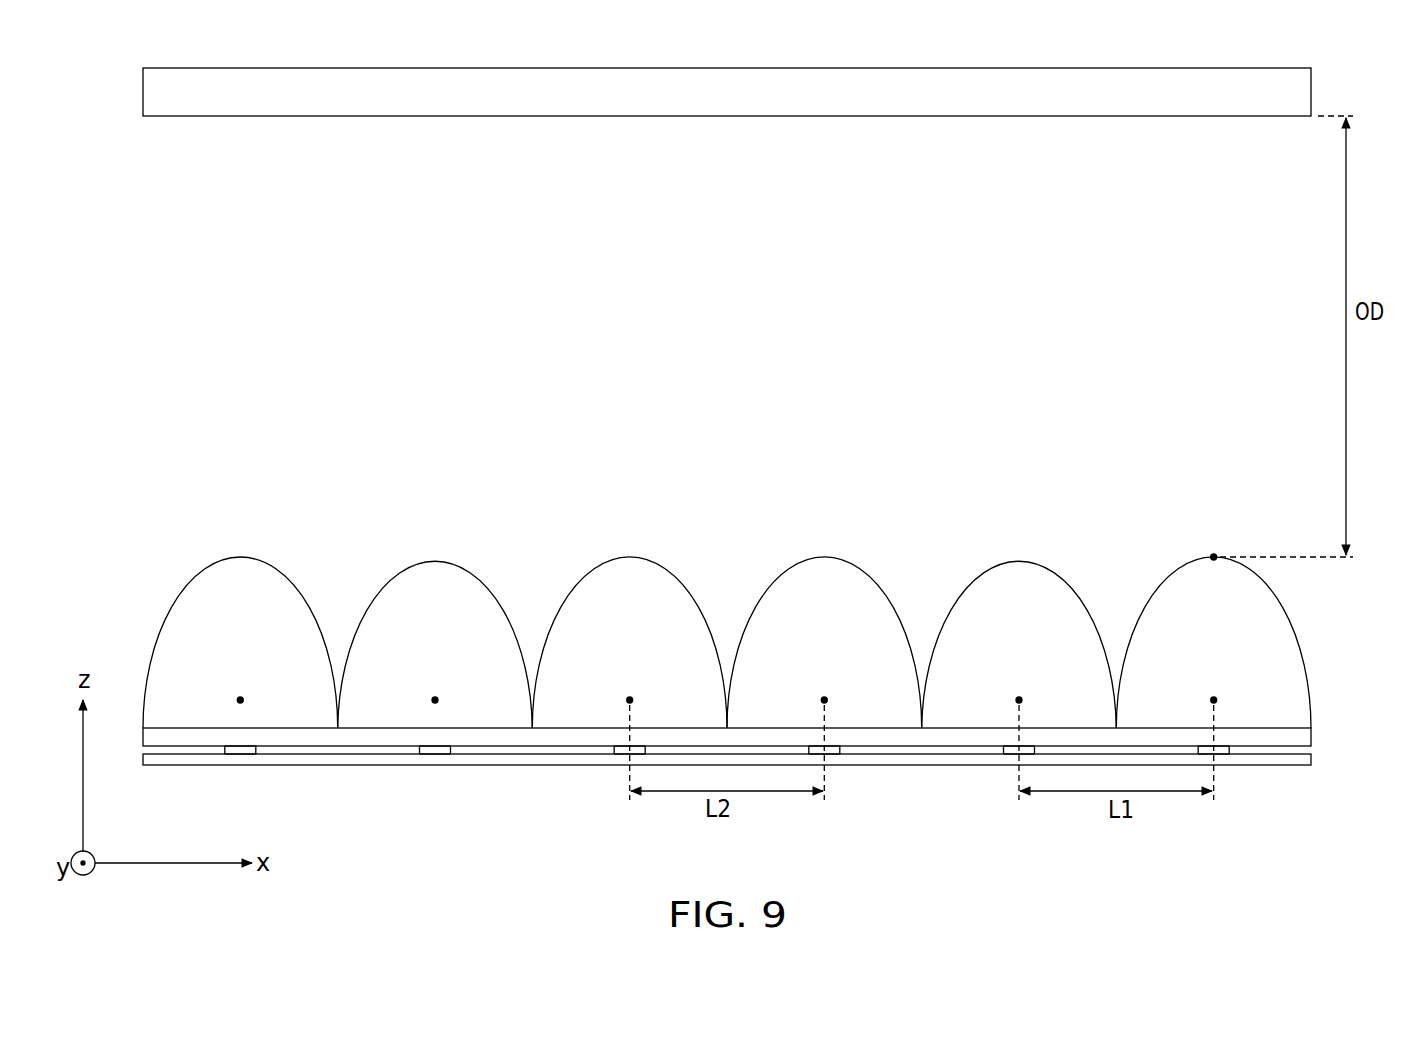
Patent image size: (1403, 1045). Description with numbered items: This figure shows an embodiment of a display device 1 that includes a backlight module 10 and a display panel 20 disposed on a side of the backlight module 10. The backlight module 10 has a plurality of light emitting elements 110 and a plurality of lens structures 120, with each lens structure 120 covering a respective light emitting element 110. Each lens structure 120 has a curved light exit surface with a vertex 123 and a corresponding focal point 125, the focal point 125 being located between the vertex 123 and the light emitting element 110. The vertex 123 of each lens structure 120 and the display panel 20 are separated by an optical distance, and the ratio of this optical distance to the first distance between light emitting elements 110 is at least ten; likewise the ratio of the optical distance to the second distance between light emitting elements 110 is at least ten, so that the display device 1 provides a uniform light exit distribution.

The display device 1 is at (113, 46).
The display panel 20 is at (318, 103).
The backlight module 10 is at (166, 548).
The light emitting element 110 is at (832, 752).
The lens structure 120 is at (1308, 624).
The vertex 123 is at (1212, 555).
The focal point 125 is at (1018, 697).